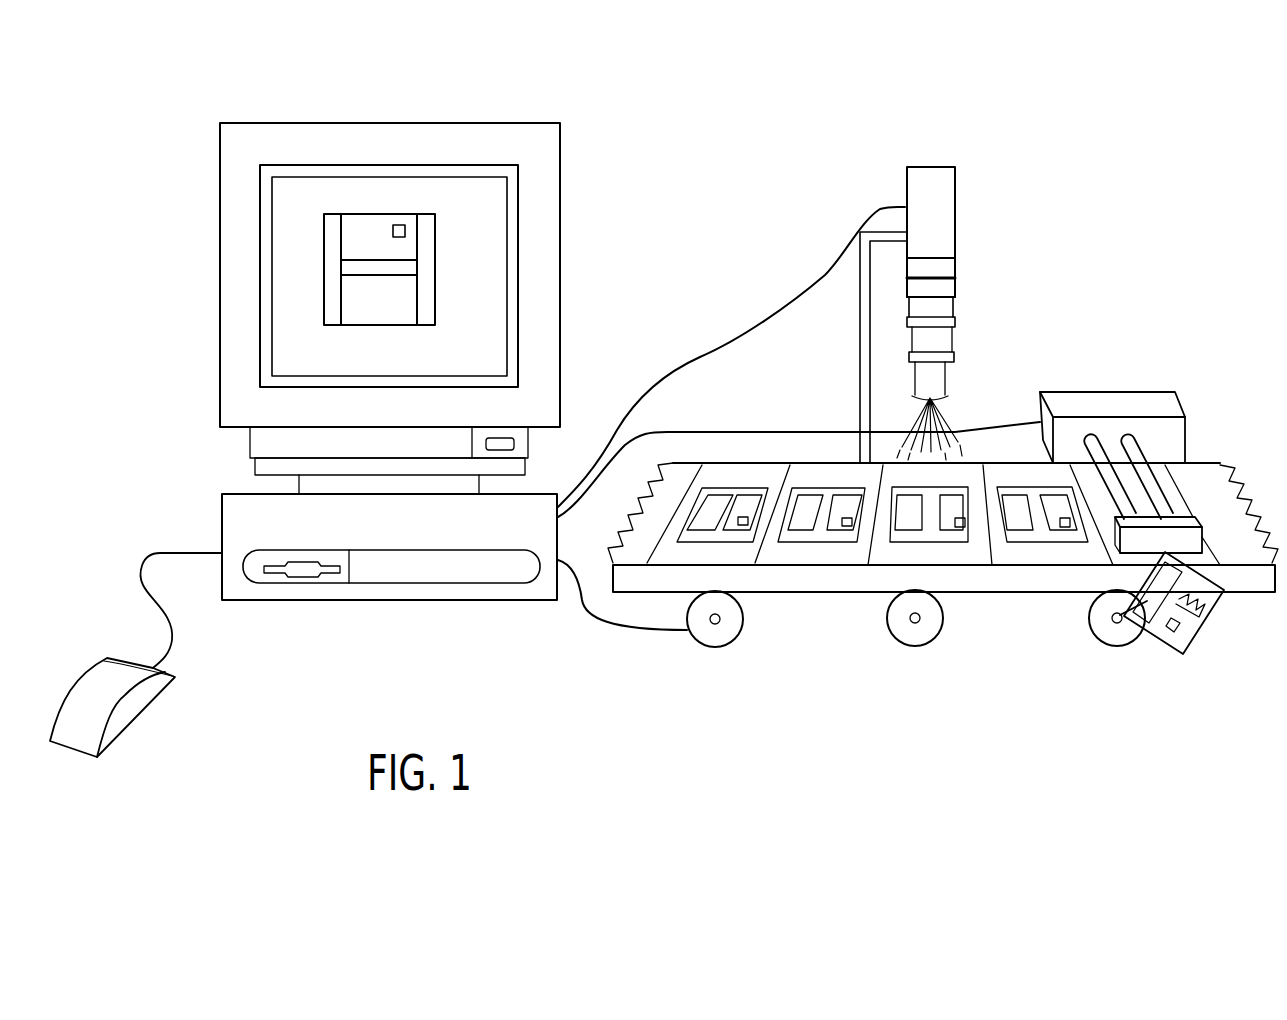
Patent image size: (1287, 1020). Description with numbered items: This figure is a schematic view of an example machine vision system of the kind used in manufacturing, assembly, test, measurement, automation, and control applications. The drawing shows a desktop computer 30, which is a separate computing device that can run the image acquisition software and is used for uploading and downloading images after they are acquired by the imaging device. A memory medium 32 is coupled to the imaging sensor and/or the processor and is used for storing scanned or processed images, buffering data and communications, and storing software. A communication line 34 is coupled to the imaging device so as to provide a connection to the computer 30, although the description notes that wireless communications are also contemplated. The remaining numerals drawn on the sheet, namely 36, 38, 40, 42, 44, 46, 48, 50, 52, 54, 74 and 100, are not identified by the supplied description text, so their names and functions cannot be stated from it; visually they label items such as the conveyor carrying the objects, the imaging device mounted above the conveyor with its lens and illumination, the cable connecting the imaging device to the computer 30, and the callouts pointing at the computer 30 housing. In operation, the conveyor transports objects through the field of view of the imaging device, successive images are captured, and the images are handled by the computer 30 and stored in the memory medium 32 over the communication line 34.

The computer 30 is at (918, 584).
The memory medium 32 is at (380, 214).
The communication line 34 is at (948, 543).
The feature of interest 36 is at (399, 225).
The conveyor 38 is at (823, 577).
The illumination source 40 is at (950, 415).
The camera 42 is at (981, 264).
The processor 44 is at (222, 494).
The lens 46 is at (947, 288).
The lens attachment 48 is at (937, 307).
The computer 50 is at (222, 514).
The camera interface 52 is at (947, 270).
The cable 54 is at (733, 340).
The memory 74 is at (222, 494).
The inspection software 100 is at (222, 494).